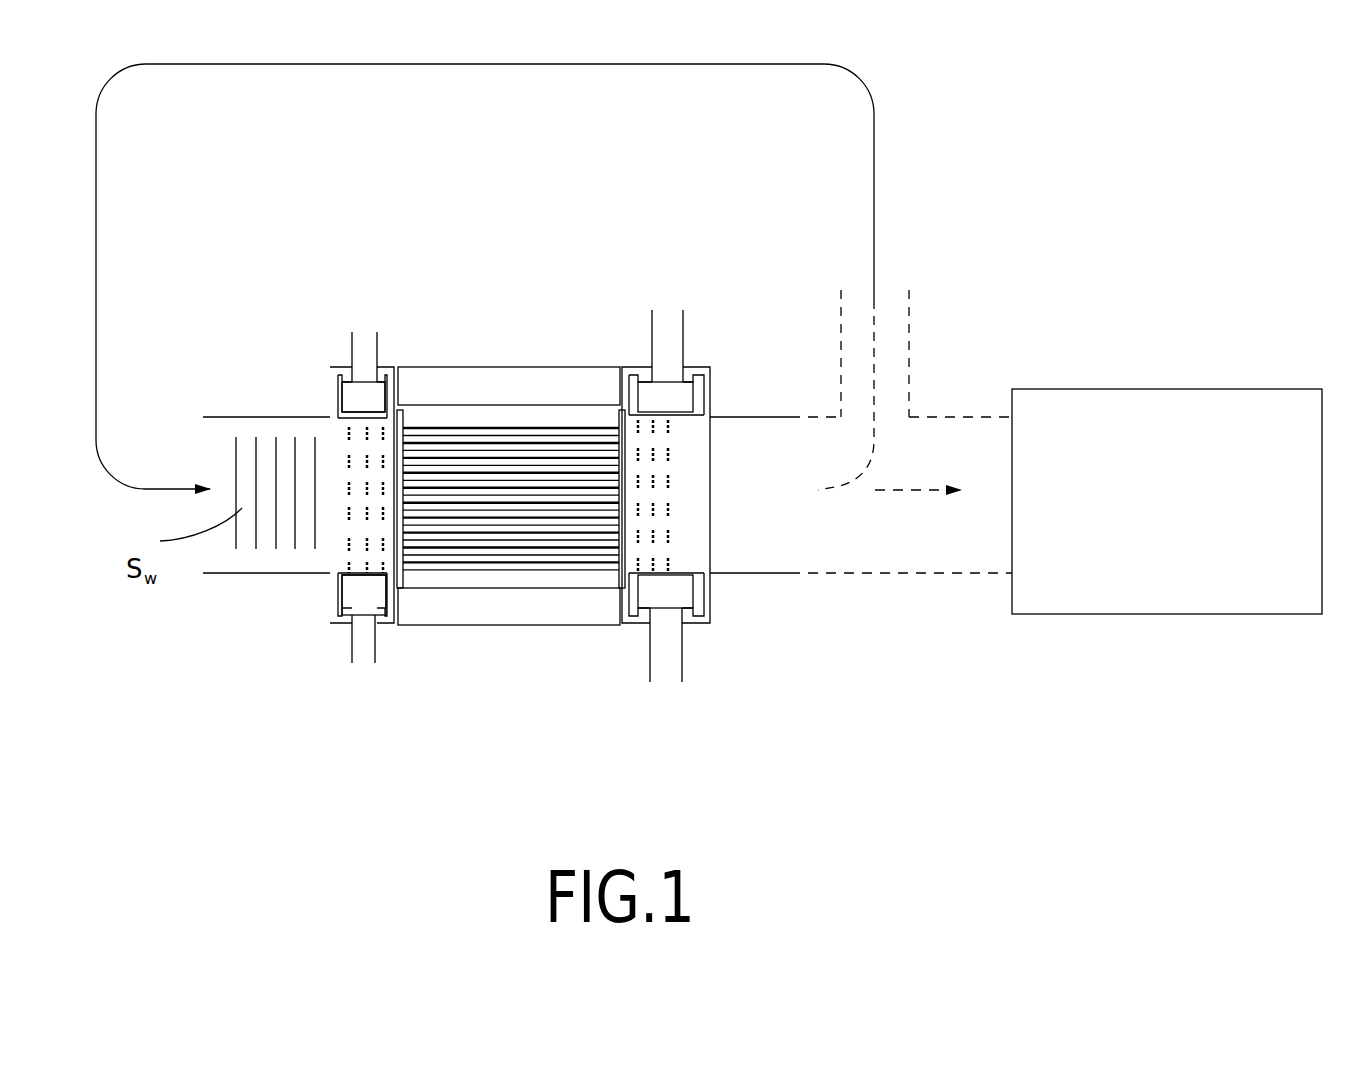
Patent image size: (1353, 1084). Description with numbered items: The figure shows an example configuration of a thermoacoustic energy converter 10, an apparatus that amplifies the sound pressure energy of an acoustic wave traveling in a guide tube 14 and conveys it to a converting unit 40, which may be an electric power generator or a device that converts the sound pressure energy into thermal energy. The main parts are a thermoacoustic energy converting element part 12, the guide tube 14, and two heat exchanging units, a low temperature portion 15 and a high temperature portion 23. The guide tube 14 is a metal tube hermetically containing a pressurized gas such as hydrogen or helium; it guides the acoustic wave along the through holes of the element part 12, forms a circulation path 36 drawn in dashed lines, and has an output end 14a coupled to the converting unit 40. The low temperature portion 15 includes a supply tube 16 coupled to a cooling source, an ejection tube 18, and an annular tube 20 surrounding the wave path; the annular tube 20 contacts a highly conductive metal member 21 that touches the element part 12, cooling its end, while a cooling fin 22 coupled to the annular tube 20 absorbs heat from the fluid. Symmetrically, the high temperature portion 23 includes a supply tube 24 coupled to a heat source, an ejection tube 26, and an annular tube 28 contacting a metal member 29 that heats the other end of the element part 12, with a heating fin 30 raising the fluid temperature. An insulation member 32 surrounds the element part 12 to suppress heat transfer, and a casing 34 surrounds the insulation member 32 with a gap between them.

The thermoacoustic energy converter 10 is at (598, 731).
The thermoacoustic energy converting element part 12 is at (560, 563).
The guide tube 14 is at (203, 578).
The output end 14a is at (1003, 416).
The low temperature portion 15 is at (298, 600).
The supply tube 16 is at (363, 332).
The ejection tube 18 is at (362, 665).
The annular tube 20 is at (347, 398).
The metal member 21 is at (402, 385).
The cooling fin 22 is at (362, 544).
The high temperature portion 23 is at (730, 644).
The supply tube 24 is at (665, 331).
The ejection tube 26 is at (668, 661).
The annular tube 28 is at (683, 367).
The metal member 29 is at (623, 380).
The heating fin 30 is at (662, 533).
The insulation member 32 is at (572, 415).
The casing 34 is at (478, 366).
The circulation path 36 is at (876, 125).
The converting unit 40 is at (1168, 389).